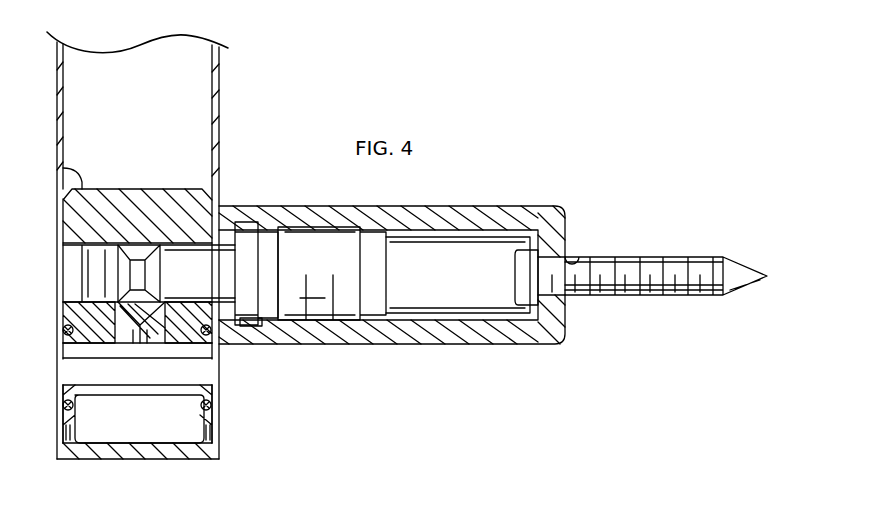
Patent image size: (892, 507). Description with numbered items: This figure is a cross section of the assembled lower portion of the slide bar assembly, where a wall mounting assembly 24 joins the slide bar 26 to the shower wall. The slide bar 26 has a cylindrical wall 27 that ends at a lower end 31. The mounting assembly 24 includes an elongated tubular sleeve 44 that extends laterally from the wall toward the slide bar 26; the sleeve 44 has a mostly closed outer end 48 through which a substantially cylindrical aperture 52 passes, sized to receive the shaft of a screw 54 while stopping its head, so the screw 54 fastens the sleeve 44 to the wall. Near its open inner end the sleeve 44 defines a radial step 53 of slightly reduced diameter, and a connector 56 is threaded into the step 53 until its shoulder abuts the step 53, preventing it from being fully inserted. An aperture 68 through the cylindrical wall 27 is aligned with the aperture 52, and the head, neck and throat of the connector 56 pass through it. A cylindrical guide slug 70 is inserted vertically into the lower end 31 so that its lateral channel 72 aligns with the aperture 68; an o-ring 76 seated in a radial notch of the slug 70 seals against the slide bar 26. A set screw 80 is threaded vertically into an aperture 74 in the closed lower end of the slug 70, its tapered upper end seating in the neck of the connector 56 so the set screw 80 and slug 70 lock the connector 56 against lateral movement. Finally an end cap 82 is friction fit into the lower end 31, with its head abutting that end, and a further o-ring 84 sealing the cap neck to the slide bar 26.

The wall mounting assembly 24 is at (257, 146).
The slide bar 26 is at (224, 77).
The cylindrical wall 27 is at (220, 104).
The lower end 31 is at (219, 432).
The tubular sleeve 44 is at (420, 345).
The outer end 48 is at (570, 207).
The aperture 52 is at (576, 261).
The radial step 53 is at (247, 330).
The screw 54 is at (620, 295).
The connector 56 is at (312, 220).
The aperture 68 is at (224, 243).
The guide slug 70 is at (72, 182).
The channel 72 is at (90, 250).
The aperture 74 is at (100, 360).
The o-ring 76 is at (88, 332).
The set screw 80 is at (108, 318).
The end cap 82 is at (128, 461).
The O-ring 84 is at (82, 410).